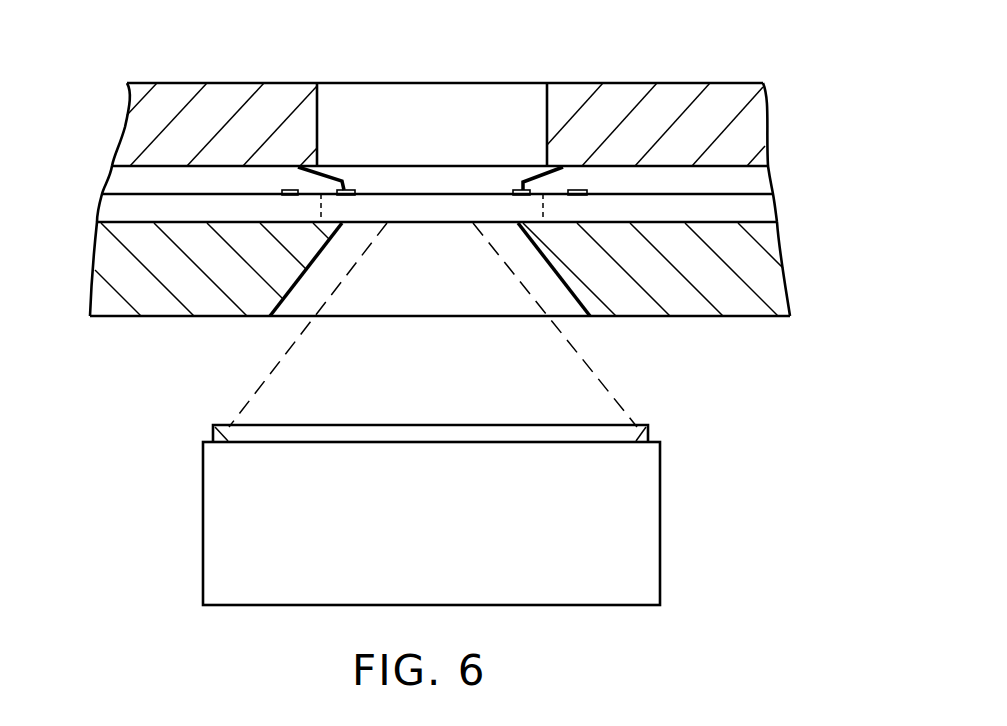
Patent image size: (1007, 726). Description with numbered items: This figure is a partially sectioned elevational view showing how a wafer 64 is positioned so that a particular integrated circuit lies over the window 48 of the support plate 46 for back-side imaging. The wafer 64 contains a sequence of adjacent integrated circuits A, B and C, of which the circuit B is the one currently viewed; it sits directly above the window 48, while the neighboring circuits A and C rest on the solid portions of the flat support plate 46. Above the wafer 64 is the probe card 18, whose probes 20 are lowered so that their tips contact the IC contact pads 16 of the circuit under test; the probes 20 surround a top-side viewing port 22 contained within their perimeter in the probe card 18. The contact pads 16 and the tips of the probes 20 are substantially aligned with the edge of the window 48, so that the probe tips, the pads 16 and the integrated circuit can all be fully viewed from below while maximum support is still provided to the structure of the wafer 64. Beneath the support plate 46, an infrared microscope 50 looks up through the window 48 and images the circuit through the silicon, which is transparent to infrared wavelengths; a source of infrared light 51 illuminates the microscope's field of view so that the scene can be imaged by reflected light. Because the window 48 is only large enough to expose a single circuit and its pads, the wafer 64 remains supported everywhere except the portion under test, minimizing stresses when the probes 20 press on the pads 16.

The contact pads 16 is at (353, 190).
The probe card 18 is at (625, 98).
The probes 20 is at (328, 171).
The top-side viewing port 22 is at (518, 103).
The support plate 46 is at (760, 280).
The window 48 is at (290, 297).
The infrared microscope 50 is at (642, 499).
The source of infrared light 51 is at (643, 423).
The wafer 64 is at (755, 208).
The integrated circuit A is at (130, 213).
The integrated circuit B is at (443, 210).
The integrated circuit C is at (612, 208).